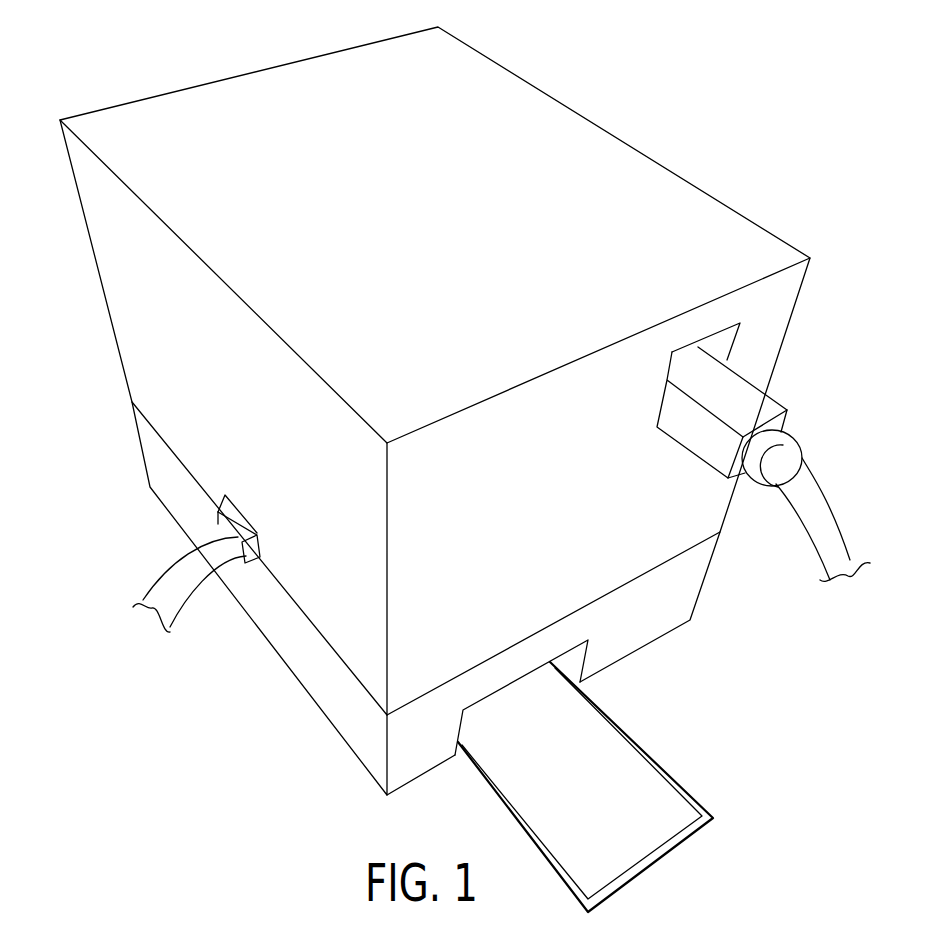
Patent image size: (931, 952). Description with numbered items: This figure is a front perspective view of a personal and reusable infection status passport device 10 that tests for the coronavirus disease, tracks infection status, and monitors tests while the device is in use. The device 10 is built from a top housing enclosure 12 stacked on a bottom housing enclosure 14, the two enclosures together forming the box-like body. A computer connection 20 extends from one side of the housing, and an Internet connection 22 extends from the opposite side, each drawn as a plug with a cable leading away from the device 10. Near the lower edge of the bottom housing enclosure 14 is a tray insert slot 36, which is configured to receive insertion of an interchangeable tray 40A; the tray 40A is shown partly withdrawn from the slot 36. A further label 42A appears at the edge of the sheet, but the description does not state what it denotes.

The personal and reusable infection status passport device 10 is at (97, 92).
The top housing enclosure 12 is at (678, 198).
The bottom housing enclosure 14 is at (337, 702).
The computer connection 20 is at (825, 513).
The Internet connection 22 is at (173, 573).
The tray insert slot 36 is at (573, 657).
The interchangeable tray 40A is at (658, 785).
The second tray 42A is at (134, 944).